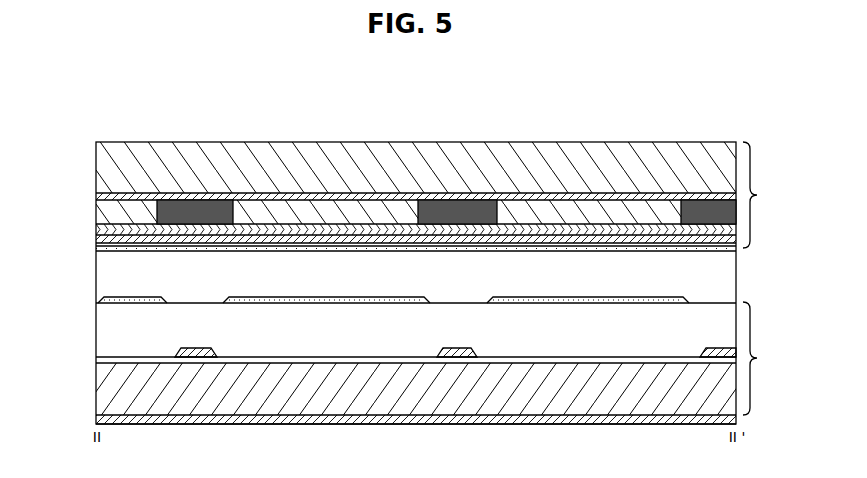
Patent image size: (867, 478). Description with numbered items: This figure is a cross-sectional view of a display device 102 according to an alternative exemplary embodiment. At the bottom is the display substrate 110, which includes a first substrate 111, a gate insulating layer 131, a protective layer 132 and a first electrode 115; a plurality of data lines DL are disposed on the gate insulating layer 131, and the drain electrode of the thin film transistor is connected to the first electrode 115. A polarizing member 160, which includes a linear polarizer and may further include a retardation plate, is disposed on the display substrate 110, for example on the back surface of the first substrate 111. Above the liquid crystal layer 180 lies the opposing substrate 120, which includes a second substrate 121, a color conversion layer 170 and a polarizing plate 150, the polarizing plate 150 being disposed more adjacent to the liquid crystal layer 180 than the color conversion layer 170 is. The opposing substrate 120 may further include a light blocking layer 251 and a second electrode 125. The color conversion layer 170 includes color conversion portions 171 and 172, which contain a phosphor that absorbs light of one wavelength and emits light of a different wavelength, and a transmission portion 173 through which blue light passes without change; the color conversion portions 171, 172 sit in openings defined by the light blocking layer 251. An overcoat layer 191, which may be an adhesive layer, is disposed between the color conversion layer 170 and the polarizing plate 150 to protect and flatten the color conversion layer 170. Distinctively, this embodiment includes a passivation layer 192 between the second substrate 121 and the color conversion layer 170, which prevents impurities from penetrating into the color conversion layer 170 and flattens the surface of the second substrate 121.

The display device 102 is at (107, 92).
The display substrate 110 is at (766, 358).
The first substrate 111 is at (104, 387).
The first electrode 115 is at (104, 300).
The opposing substrate 120 is at (766, 195).
The second substrate 121 is at (383, 178).
The second electrode 125 is at (104, 248).
The gate insulating layer 131 is at (104, 357).
The protective layer 132 is at (104, 327).
The polarizing plate 150 is at (104, 239).
The polarizing member 160 is at (104, 419).
The color conversion layer 170 is at (87, 211).
The color conversion portion 171 is at (335, 210).
The color conversion portion 172 is at (591, 212).
The transmission portion 173 is at (125, 212).
The liquid crystal layer 180 is at (104, 272).
The overcoat layer 191 is at (104, 229).
The passivation layer 192 is at (457, 198).
The light blocking layer 251 is at (197, 208).
The data line DL is at (192, 355).